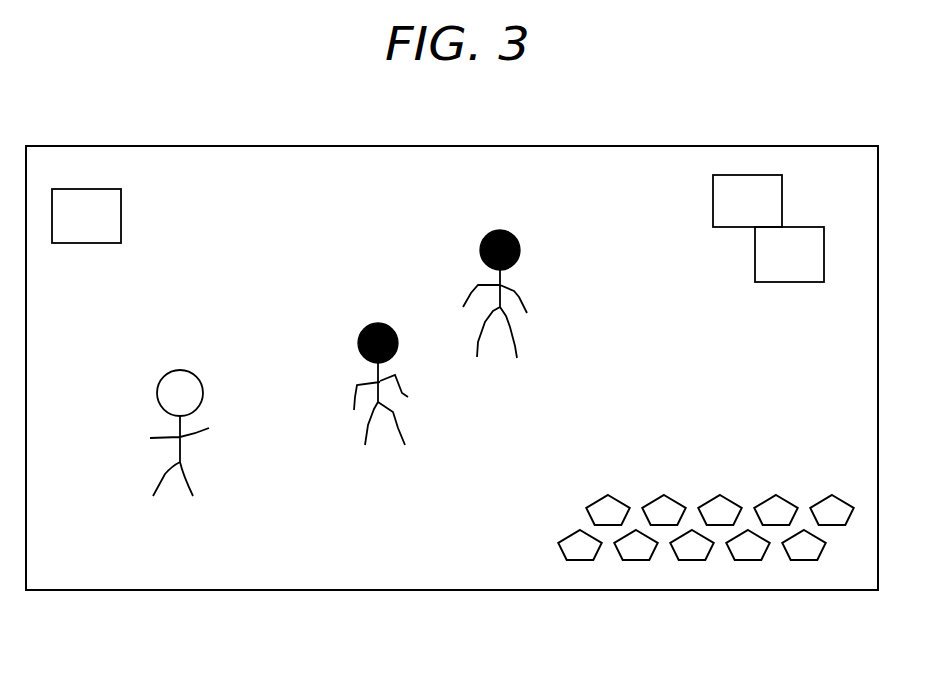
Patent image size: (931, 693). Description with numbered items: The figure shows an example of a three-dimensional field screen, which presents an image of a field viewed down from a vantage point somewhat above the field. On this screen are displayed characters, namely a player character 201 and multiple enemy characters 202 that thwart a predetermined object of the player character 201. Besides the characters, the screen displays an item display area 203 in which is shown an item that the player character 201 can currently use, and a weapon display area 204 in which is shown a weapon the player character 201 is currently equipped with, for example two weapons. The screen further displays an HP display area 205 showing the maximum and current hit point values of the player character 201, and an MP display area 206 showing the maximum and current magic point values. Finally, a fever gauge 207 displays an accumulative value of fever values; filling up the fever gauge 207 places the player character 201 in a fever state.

The player character 201 is at (187, 371).
The enemy characters 202 is at (366, 326).
The item display area 203 is at (121, 215).
The weapon display area 204 is at (713, 201).
The HP display area 205 is at (178, 575).
The MP display area 206 is at (430, 575).
The fever gauge 207 is at (718, 577).